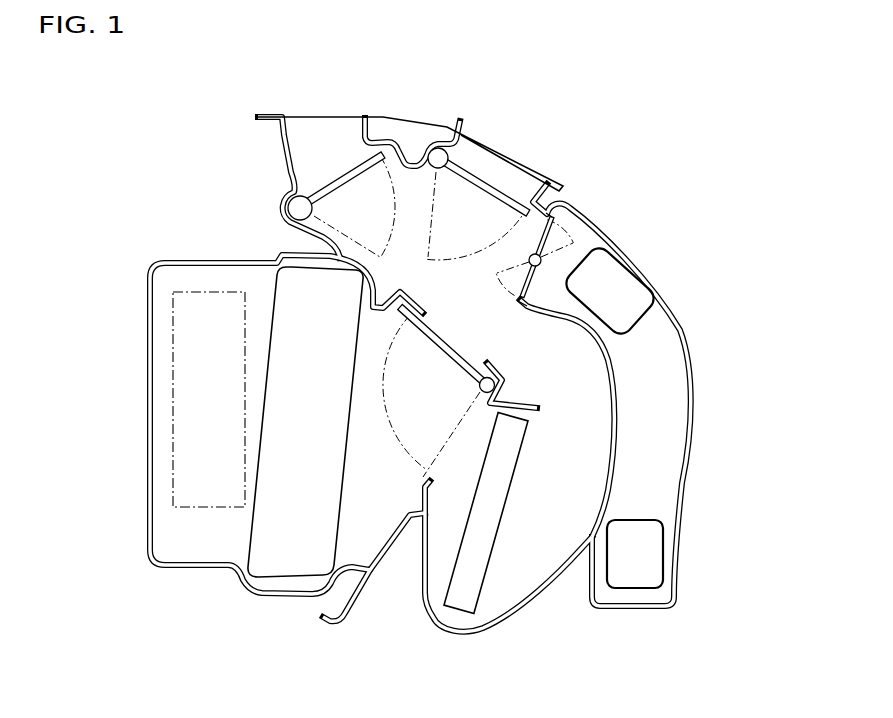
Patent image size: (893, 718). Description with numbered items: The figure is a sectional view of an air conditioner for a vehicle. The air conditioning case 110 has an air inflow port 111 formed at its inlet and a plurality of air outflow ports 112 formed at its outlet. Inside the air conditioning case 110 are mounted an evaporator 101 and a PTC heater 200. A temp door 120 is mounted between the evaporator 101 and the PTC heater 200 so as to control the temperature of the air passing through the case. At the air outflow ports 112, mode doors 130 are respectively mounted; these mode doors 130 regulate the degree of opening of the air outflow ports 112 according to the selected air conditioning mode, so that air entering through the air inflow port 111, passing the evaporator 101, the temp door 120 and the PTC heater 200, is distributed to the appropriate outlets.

The air conditioning case 110 is at (693, 417).
The air outflow ports 112 is at (319, 132).
The mode doors 130 is at (330, 186).
The temp door 120 is at (452, 364).
The air inflow port 111 is at (173, 400).
The evaporator 101 is at (278, 577).
The PTC heater 200 is at (460, 595).